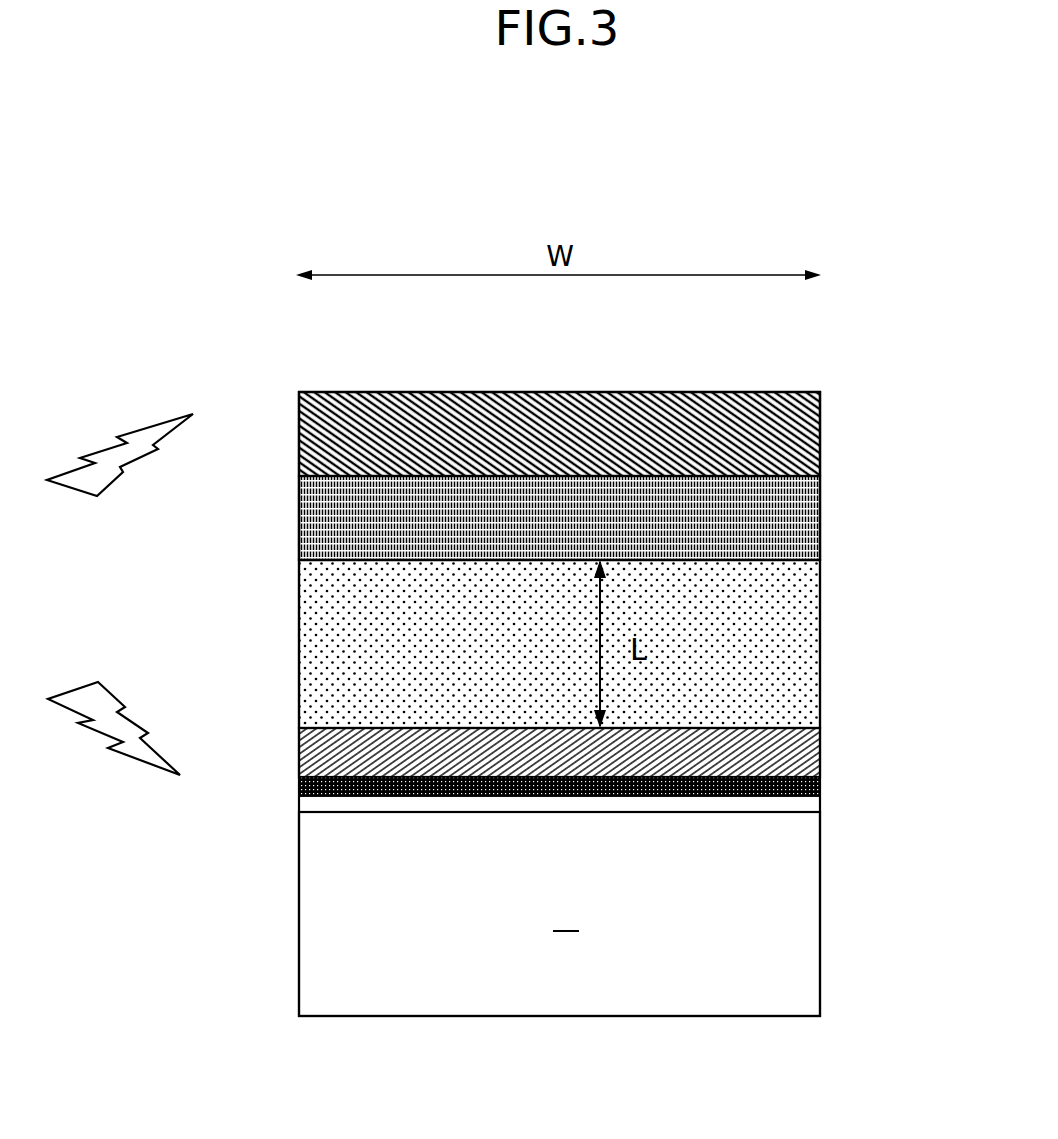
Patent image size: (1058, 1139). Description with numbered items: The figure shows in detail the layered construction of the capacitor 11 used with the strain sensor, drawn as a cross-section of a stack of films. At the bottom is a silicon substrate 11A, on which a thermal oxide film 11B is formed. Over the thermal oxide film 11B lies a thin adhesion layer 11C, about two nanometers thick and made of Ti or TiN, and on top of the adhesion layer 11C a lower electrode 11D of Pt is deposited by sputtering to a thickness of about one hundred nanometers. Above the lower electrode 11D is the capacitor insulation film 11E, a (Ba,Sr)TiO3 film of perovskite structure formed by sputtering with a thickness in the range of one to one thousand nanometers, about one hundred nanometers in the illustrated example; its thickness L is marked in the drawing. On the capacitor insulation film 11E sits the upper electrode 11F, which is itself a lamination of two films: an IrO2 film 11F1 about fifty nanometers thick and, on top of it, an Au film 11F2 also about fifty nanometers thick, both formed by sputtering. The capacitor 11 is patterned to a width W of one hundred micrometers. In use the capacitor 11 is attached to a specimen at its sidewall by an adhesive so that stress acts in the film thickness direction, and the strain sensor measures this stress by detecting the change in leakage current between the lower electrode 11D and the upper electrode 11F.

The capacitor 11 is at (542, 137).
The silicon substrate 11A is at (820, 907).
The thermal oxide film 11B is at (299, 810).
The adhesion layer 11C is at (820, 785).
The lower electrode 11D is at (820, 740).
The capacitor insulation film 11E is at (820, 638).
The upper electrode 11F is at (858, 387).
The IrO2 film 11F1 is at (299, 526).
The Au film 11F2 is at (299, 443).